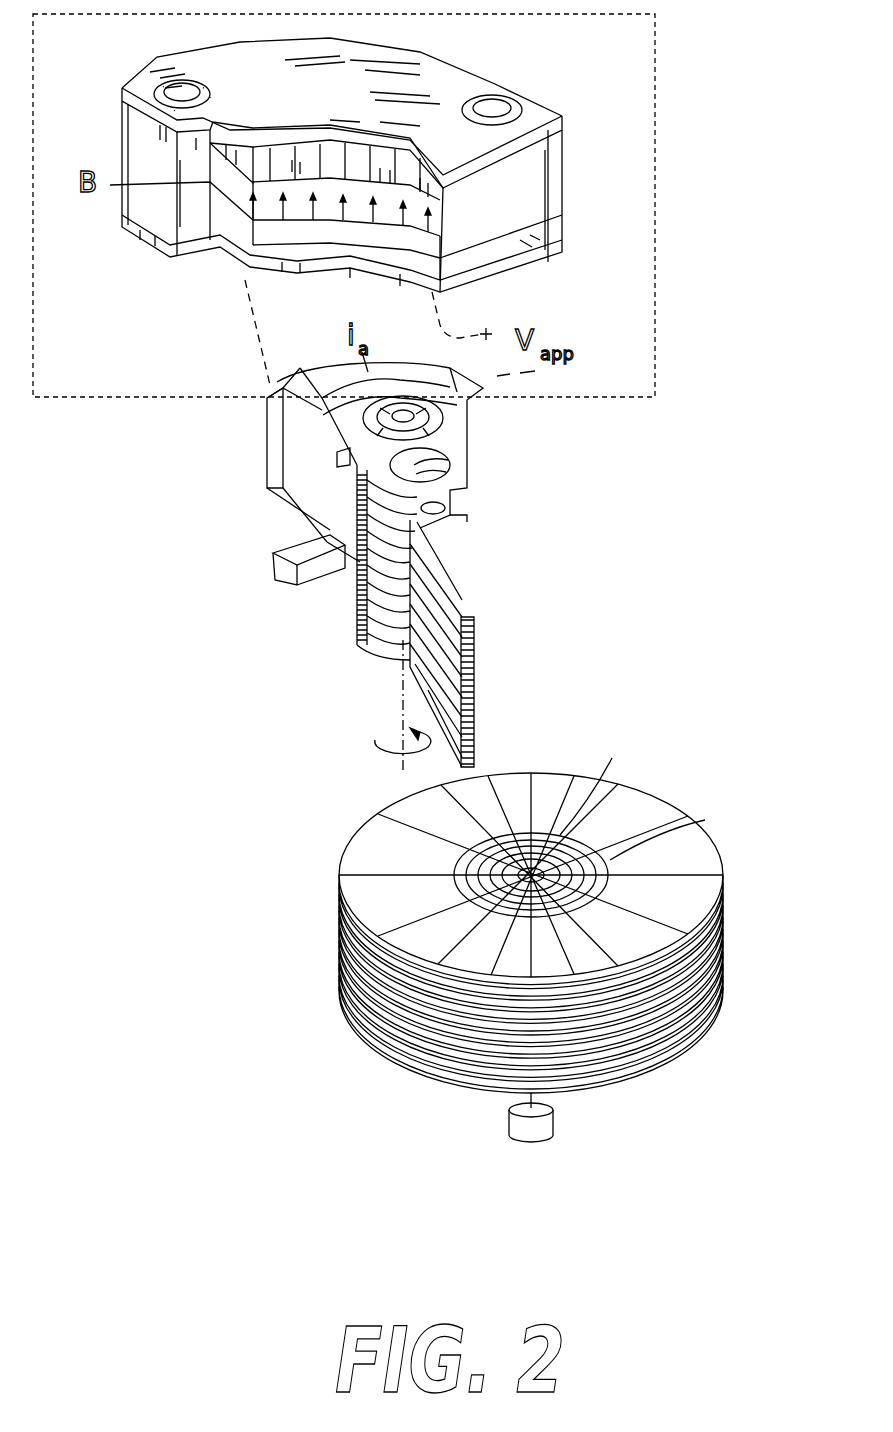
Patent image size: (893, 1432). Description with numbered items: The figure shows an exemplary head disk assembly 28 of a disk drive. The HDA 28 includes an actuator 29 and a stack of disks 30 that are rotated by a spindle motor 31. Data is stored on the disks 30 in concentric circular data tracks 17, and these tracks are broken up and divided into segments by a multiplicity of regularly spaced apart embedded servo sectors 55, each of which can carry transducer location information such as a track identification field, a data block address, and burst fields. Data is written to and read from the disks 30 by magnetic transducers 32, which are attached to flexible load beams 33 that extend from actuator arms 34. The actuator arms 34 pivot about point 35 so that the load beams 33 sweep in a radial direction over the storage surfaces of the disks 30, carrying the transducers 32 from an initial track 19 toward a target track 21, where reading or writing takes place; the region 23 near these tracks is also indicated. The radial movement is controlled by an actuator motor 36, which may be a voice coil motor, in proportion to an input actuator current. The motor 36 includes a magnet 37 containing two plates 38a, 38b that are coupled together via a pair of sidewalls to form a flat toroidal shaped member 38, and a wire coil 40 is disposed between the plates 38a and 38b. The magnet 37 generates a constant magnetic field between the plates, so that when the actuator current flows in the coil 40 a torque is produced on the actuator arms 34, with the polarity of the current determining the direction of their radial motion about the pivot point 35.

The data tracks 17 is at (548, 833).
The initial track 19 is at (590, 840).
The target track 21 is at (690, 825).
The servo wedge 23 is at (610, 785).
The head disk assembly 28 is at (535, 545).
The actuator 29 is at (110, 478).
The disks 30 is at (522, 932).
The spindle motor 31 is at (505, 1125).
The magnetic transducers 32 is at (473, 618).
The flexible load beams 33 is at (460, 560).
The actuator arms 34 is at (460, 487).
The pivot point 35 is at (443, 416).
The actuator motor 36 is at (658, 190).
The magnet 37 is at (445, 43).
The flat toroidal shaped member 38 is at (548, 192).
The plate 38a is at (300, 140).
The plate 38b is at (295, 268).
The wire coil 40 is at (285, 380).
The servo sectors 55 is at (342, 880).